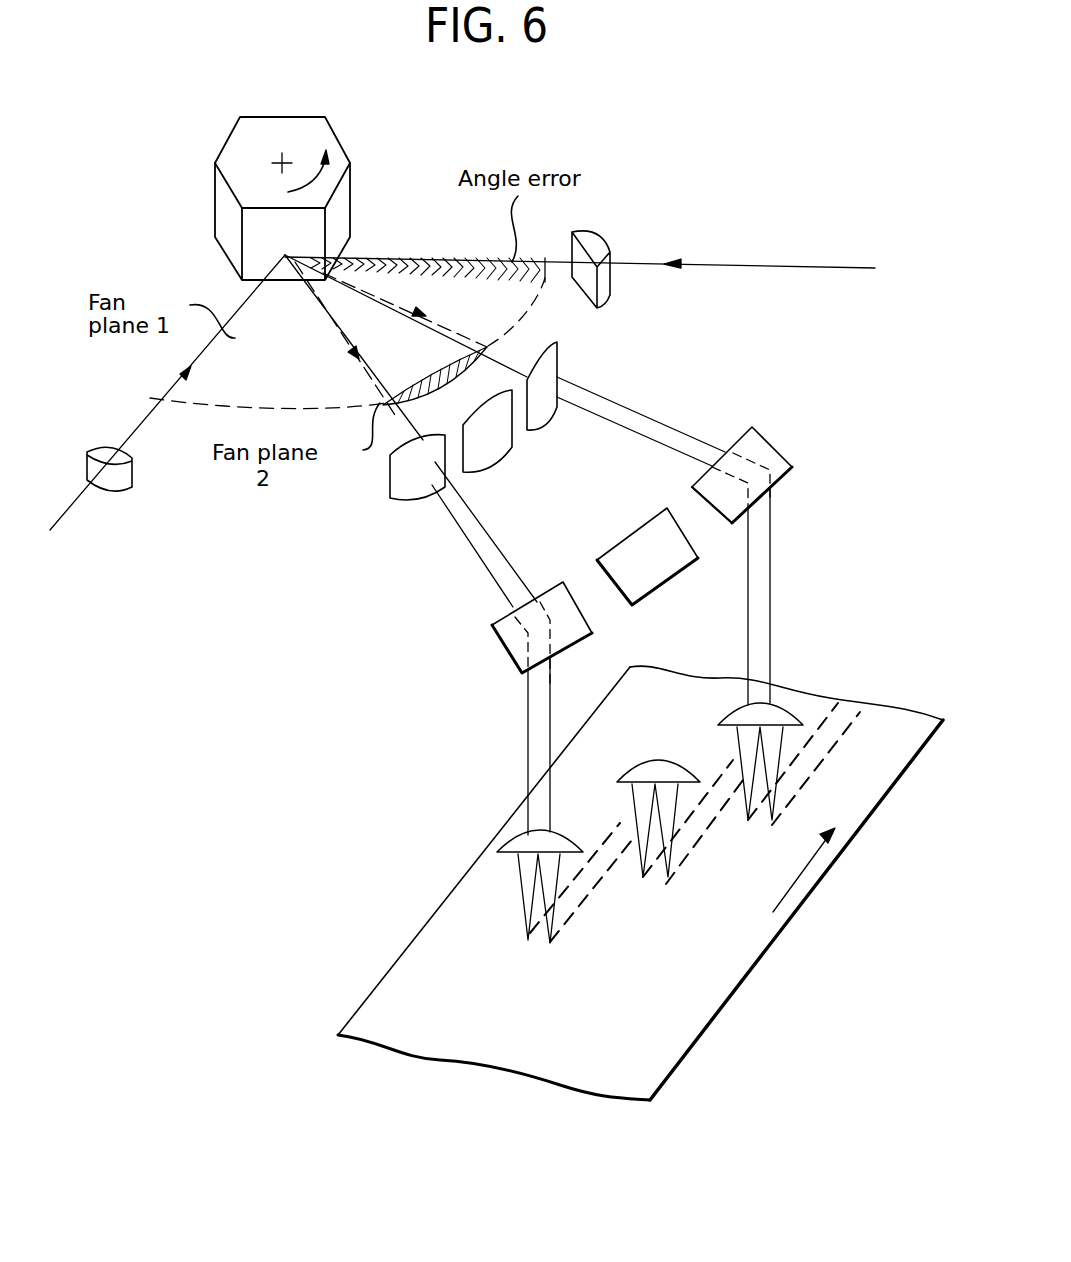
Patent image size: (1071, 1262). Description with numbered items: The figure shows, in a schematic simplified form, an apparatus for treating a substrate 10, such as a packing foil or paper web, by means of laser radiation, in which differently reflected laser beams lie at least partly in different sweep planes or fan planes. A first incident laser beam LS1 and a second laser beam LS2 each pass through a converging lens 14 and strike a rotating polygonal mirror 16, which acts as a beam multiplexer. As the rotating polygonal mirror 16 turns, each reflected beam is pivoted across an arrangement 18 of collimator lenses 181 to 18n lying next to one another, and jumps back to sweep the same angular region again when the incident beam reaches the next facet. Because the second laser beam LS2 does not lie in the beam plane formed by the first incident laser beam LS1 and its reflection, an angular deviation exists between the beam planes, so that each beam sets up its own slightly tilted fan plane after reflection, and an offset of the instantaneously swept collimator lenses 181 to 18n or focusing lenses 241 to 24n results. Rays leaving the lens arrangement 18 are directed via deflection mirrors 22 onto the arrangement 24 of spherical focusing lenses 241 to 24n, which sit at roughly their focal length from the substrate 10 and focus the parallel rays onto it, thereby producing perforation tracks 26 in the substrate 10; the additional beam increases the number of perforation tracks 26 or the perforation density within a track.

The substrate 10 is at (695, 1007).
The converging lens 14 is at (602, 248).
The rotating polygonal mirror 16 is at (350, 137).
The arrangement of collimator lenses 18 is at (507, 438).
The first collimator lens 181 is at (407, 492).
The n-th collimator lens 18n is at (558, 363).
The deflection mirror 22 is at (773, 458).
The arrangement of focusing lenses 24 is at (639, 794).
The first focusing lens 241 is at (521, 843).
The n-th focusing lens 24n is at (787, 717).
The perforation track 26 is at (591, 889).
The first incident laser beam LS1 is at (153, 410).
The second laser beam LS2 is at (828, 266).